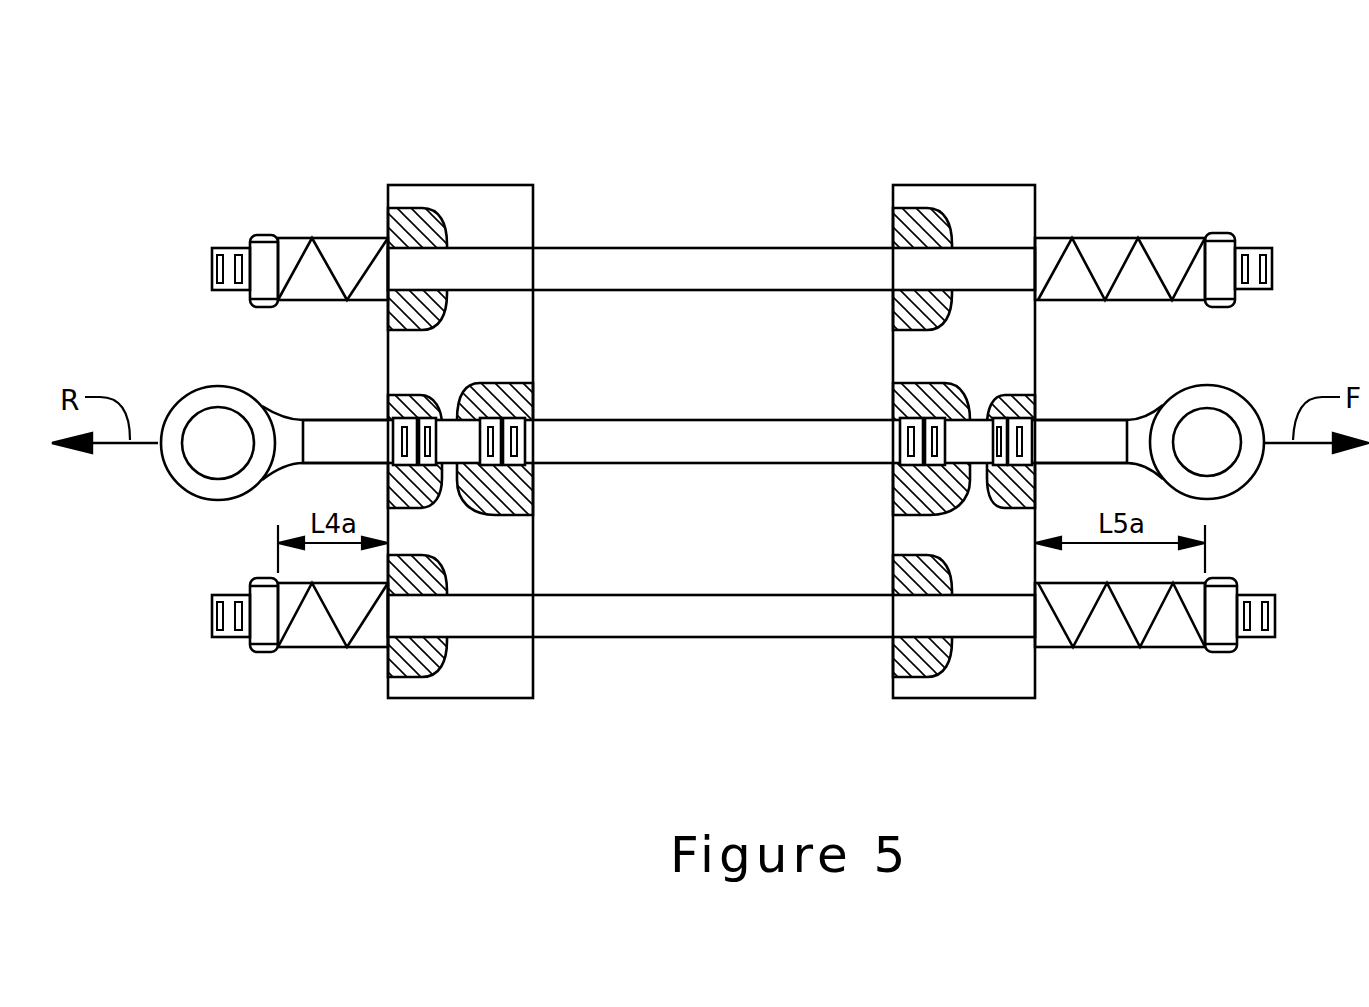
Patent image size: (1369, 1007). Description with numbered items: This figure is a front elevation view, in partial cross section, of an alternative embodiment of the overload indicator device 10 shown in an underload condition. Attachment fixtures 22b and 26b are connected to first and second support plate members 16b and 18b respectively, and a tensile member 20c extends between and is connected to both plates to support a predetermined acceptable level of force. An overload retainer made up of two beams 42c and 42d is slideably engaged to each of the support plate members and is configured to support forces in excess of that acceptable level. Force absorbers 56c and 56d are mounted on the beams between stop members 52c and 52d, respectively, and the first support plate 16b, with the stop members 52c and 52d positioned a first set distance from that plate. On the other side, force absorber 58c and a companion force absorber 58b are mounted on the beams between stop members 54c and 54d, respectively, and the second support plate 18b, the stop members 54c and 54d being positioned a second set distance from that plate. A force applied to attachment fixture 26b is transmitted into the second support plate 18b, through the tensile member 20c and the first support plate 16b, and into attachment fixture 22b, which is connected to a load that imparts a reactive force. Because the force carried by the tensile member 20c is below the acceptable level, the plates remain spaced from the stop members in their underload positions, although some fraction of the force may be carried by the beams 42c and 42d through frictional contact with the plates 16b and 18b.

The device 10 is at (1165, 80).
The first support plate member 16b is at (463, 185).
The second support plate member 18b is at (963, 185).
The tensile member 20c is at (730, 421).
The attachment fixture 22b is at (213, 385).
The attachment fixture 26b is at (1208, 385).
The beam 42c is at (727, 248).
The beam 42d is at (727, 637).
The stop member 52c is at (255, 236).
The stop member 52d is at (255, 650).
The stop member 54c is at (1208, 233).
The stop member 54d is at (1215, 652).
The force absorber 56c is at (355, 238).
The force absorber 56d is at (340, 647).
The force absorber 58c is at (1108, 238).
The lower right threaded end 58b is at (1098, 645).